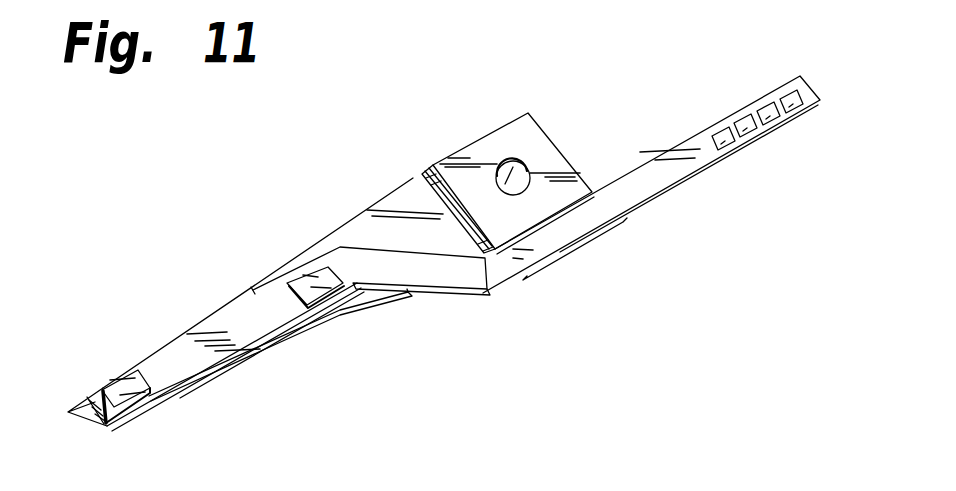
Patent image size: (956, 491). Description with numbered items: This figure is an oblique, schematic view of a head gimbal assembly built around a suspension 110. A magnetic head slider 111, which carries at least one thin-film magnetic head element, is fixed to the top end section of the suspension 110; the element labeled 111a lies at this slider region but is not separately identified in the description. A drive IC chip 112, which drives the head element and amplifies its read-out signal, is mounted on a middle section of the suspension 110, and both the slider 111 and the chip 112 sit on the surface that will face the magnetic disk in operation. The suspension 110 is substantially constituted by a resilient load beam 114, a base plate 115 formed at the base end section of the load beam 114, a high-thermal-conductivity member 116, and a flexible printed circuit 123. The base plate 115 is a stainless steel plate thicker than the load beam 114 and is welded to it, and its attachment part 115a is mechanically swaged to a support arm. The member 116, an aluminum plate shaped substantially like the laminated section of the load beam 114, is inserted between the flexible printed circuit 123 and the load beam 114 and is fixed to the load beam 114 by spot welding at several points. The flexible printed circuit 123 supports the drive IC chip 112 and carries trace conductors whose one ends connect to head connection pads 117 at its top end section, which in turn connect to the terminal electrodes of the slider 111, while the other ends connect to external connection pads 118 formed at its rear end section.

The suspension 110 is at (330, 118).
The magnetic head slider 111 is at (136, 395).
The head slider 111a is at (112, 393).
The drive IC chip 112 is at (303, 283).
The load beam 114 is at (433, 166).
The base plate 115 is at (556, 166).
The attachment part 115a is at (503, 172).
The high-thermal-conductivity member 116 is at (368, 222).
The head connection pads 117 is at (64, 418).
The external connection pads 118 is at (790, 102).
The flexible printed circuit 123 is at (638, 192).